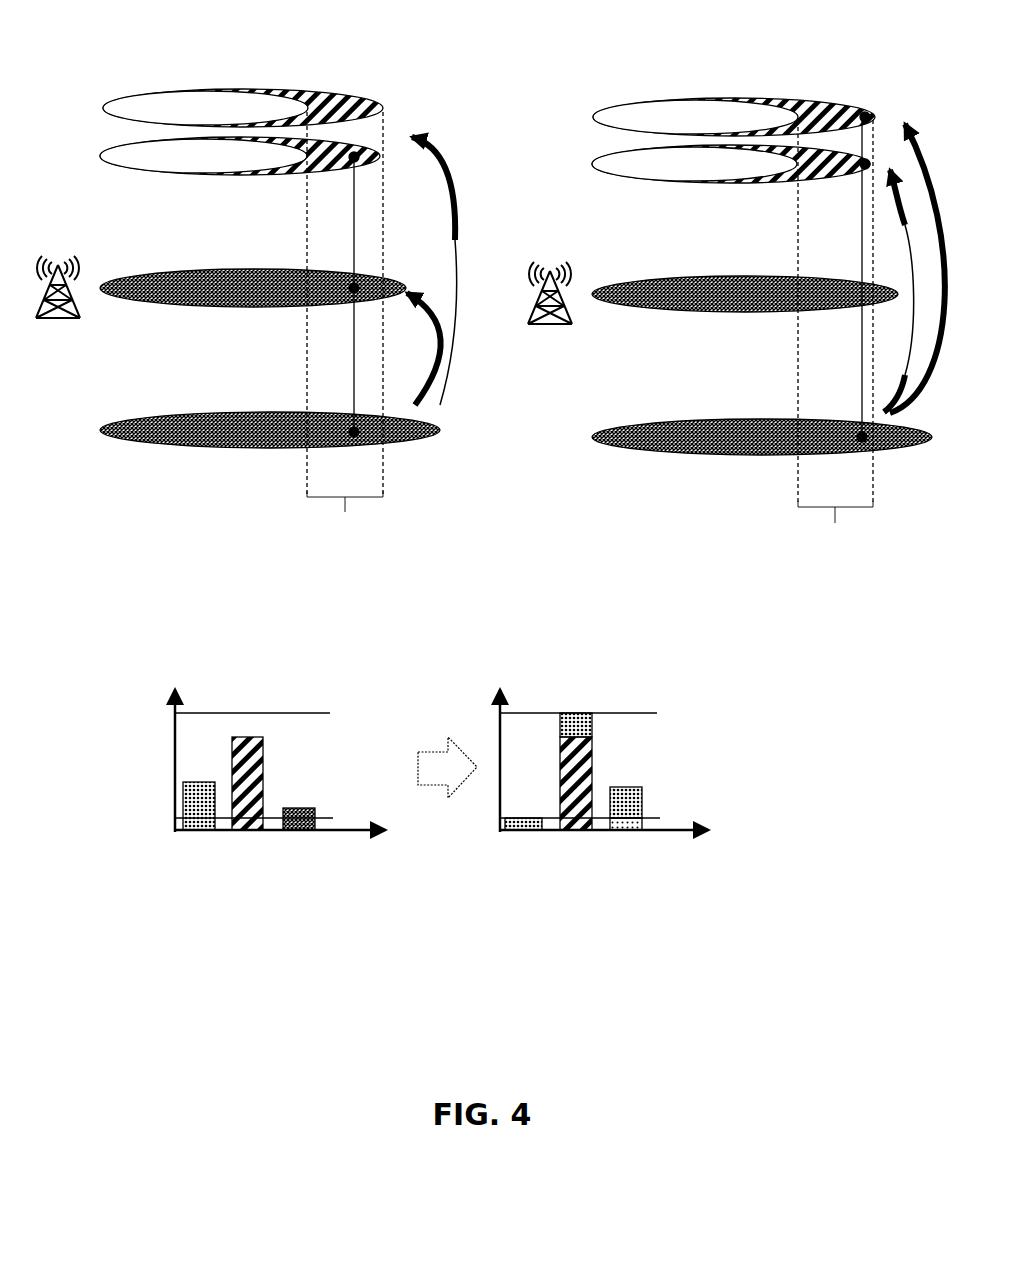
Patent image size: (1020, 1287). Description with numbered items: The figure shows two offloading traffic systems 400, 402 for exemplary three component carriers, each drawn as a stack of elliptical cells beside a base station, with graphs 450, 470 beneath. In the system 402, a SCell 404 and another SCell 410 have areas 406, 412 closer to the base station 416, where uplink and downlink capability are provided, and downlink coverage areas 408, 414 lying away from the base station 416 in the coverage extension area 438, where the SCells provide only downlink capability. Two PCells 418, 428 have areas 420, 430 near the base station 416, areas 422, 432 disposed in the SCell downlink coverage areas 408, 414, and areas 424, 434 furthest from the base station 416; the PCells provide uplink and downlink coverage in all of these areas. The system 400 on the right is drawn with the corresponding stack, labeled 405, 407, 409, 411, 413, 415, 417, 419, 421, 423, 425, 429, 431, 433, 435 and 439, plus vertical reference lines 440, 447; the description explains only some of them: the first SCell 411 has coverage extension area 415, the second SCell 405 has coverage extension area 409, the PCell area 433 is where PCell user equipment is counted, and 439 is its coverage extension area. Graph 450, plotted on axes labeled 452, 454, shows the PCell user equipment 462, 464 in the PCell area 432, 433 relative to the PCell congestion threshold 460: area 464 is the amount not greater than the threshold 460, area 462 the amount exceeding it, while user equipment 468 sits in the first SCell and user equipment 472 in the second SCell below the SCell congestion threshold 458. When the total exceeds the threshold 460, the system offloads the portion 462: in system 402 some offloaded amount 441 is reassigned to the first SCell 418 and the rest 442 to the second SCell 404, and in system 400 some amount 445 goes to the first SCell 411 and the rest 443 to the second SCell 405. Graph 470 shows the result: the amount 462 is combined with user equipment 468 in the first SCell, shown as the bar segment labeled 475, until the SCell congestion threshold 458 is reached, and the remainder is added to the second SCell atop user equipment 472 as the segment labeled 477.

The offloading traffic system 400 is at (710, 48).
The offloading traffic system 402 is at (219, 40).
The SCell 404 is at (104, 98).
The second SCell 405 is at (597, 108).
The area 406 is at (145, 92).
The beam 407 is at (635, 101).
The downlink coverage area 408 is at (325, 92).
The coverage extension area 409 is at (815, 101).
The SCell 410 is at (88, 156).
The first SCell 411 is at (583, 164).
The area 412 is at (130, 165).
The beam 413 is at (620, 174).
The downlink coverage area 414 is at (340, 168).
The coverage extension area 415 is at (832, 180).
The base station 416 is at (55, 312).
The base station 417 is at (545, 320).
The PCell 418 is at (178, 253).
The coverage region 419 is at (665, 263).
The area 420 is at (172, 303).
The coverage area 421 is at (660, 311).
The area 422 is at (330, 305).
The inner boundary 423 is at (825, 313).
The area 424 is at (395, 300).
The outer boundary 425 is at (877, 307).
The PCell 428 is at (240, 391).
The coverage region 429 is at (728, 403).
The area 430 is at (192, 445).
The coverage area 431 is at (688, 453).
The area 432 is at (335, 440).
The coverage extension area 433 is at (825, 454).
The area 434 is at (428, 440).
The edge 435 is at (920, 446).
The coverage extension area 438 is at (383, 499).
The coverage extension area 439 is at (870, 509).
The vertical axis 440 is at (357, 240).
The offloaded amount 441 is at (420, 298).
The offloaded amount 442 is at (455, 237).
The amount 443 is at (905, 118).
The amount 445 is at (913, 250).
The vertical axis 447 is at (857, 243).
The graph 450 is at (238, 653).
The vertical axis 452 is at (173, 712).
The horizontal axis 454 is at (345, 832).
The SCell congestion threshold 458 is at (270, 713).
The PCell congestion threshold 460 is at (325, 817).
The user equipment 462 is at (185, 800).
The user equipment 464 is at (170, 832).
The user equipment 468 is at (265, 778).
The graph 470 is at (594, 653).
The user equipment 472 is at (285, 832).
The added bar portion 475 is at (595, 717).
The added bar portion 477 is at (643, 790).